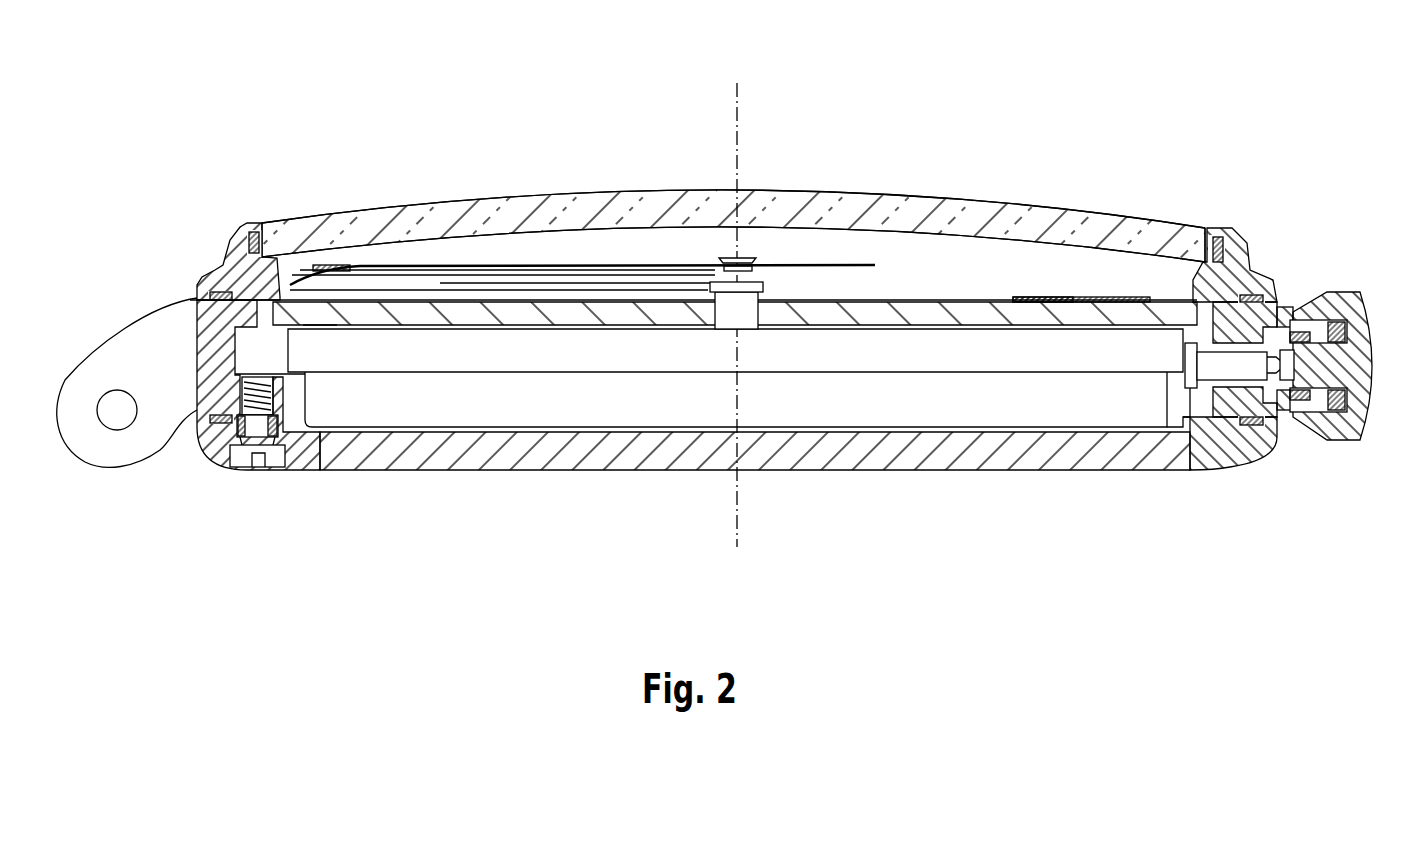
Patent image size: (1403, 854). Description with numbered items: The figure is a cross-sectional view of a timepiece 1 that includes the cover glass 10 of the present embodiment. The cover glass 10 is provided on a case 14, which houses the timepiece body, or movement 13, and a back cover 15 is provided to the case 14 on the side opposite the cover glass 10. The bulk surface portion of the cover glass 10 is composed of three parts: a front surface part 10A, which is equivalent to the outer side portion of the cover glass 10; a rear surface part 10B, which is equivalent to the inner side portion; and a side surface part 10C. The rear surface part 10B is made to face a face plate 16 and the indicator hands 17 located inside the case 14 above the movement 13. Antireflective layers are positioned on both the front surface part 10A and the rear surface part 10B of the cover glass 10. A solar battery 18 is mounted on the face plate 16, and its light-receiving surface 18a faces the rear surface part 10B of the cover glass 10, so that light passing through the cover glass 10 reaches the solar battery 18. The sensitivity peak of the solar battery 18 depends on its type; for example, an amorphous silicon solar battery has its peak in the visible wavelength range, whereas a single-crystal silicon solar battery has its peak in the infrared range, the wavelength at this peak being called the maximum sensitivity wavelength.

The timepiece 1 is at (714, 302).
The cover glass 10 is at (1103, 213).
The front surface part 10A is at (860, 193).
The rear surface part 10B is at (917, 230).
The side surface part 10C is at (1227, 230).
The timepiece body (movement) 13 is at (1088, 348).
The case 14 is at (1270, 283).
The back cover 15 is at (905, 470).
The face plate 16 is at (993, 306).
The indicator hands 17 is at (567, 280).
The solar battery 18 is at (1120, 297).
The light-receiving surface 18a is at (1037, 297).